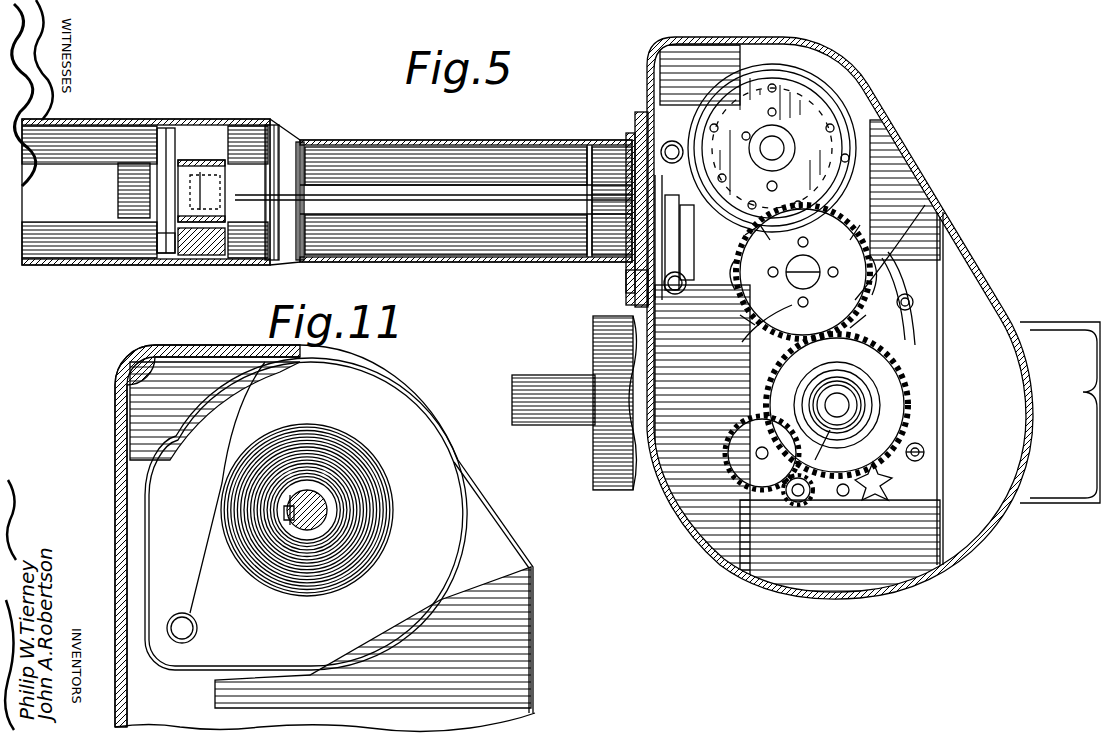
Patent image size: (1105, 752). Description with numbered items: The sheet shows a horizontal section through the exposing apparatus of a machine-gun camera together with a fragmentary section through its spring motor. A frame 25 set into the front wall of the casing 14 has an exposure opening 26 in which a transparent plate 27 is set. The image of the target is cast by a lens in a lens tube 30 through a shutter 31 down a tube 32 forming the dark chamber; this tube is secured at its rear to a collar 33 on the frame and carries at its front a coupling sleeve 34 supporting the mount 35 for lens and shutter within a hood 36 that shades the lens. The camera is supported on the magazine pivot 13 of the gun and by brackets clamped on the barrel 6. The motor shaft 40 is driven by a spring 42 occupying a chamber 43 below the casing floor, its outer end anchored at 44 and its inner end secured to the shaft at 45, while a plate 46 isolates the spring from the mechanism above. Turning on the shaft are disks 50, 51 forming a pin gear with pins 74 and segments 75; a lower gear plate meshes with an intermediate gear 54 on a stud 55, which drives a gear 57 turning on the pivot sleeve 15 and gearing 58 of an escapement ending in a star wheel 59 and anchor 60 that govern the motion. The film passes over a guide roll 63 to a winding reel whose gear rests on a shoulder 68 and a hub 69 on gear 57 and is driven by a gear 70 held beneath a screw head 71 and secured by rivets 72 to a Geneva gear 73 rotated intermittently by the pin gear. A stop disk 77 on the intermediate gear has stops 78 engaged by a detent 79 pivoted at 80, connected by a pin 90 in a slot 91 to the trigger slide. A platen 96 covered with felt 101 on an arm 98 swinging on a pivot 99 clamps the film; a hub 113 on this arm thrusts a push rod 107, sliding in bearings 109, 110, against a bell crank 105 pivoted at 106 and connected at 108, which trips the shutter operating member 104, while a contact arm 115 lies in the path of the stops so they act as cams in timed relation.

In FIG. 5, the barrel 6 is at (545, 425).
In FIG. 5, the magazine pivot 13 is at (852, 392).
In FIG. 5, the casing 14 is at (740, 40).
In FIG. 11, the casing 14 is at (517, 557).
In FIG. 5, the pivot sleeve 15 is at (819, 449).
In FIG. 5, the frame 25 is at (638, 135).
In FIG. 5, the opening 26 is at (630, 268).
In FIG. 5, the transparent plate 27 is at (566, 201).
In FIG. 5, the lens tube 30 is at (118, 190).
In FIG. 5, the shutter 31 is at (160, 205).
In FIG. 5, the tube 32 is at (466, 201).
In FIG. 5, the collar 33 is at (590, 148).
In FIG. 5, the coupling sleeve 34 is at (280, 130).
In FIG. 5, the mount 35 is at (210, 160).
In FIG. 5, the hood 36 is at (140, 120).
In FIG. 5, the motor shaft 40 is at (778, 142).
In FIG. 11, the spring 42 is at (321, 600).
In FIG. 11, the chamber 43 is at (306, 514).
In FIG. 11, the spring end ring 44 is at (197, 634).
In FIG. 11, the inner end anchorage 45 is at (312, 510).
In FIG. 5, the plate 46 is at (862, 127).
In FIG. 5, the disk 50 is at (770, 136).
In FIG. 5, the disk 51 is at (834, 98).
In FIG. 5, the intermediate gear 54 is at (767, 332).
In FIG. 5, the stud 55 is at (776, 196).
In FIG. 5, the gear 57 is at (837, 405).
In FIG. 5, the gearing 58 is at (758, 490).
In FIG. 5, the star wheel 59 is at (805, 505).
In FIG. 5, the anchor 60 is at (843, 498).
In FIG. 5, the guide roll 63 is at (632, 133).
In FIG. 5, the shoulder 68 is at (858, 400).
In FIG. 5, the hub 69 is at (860, 410).
In FIG. 5, the gear 70 is at (803, 272).
In FIG. 5, the confining screw head 71 is at (795, 265).
In FIG. 5, the rivets 72 is at (833, 266).
In FIG. 5, the Geneva gear 73 is at (856, 318).
In FIG. 5, the pins 74 is at (850, 158).
In FIG. 5, the segments 75 is at (786, 145).
In FIG. 5, the stop disk 77 is at (925, 205).
In FIG. 5, the stops 78 is at (944, 218).
In FIG. 5, the detent 79 is at (895, 275).
In FIG. 5, the pivot 80 is at (925, 452).
In FIG. 5, the pin 90 is at (914, 300).
In FIG. 5, the slot 91 is at (745, 170).
In FIG. 5, the platen 96 is at (676, 163).
In FIG. 5, the arm 98 is at (658, 280).
In FIG. 5, the pivot 99 is at (690, 272).
In FIG. 5, the felt 101 is at (612, 201).
In FIG. 5, the shutter operating member 104 is at (166, 255).
In FIG. 5, the bell crank 105 is at (222, 200).
In FIG. 5, the pivot 106 is at (210, 255).
In FIG. 5, the push rod 107 is at (445, 216).
In FIG. 5, the pivot 108 is at (205, 185).
In FIG. 5, the bearing 109 is at (433, 189).
In FIG. 5, the bearing 110 is at (466, 208).
In FIG. 5, the hub 113 is at (687, 286).
In FIG. 5, the contact arm 115 is at (700, 258).